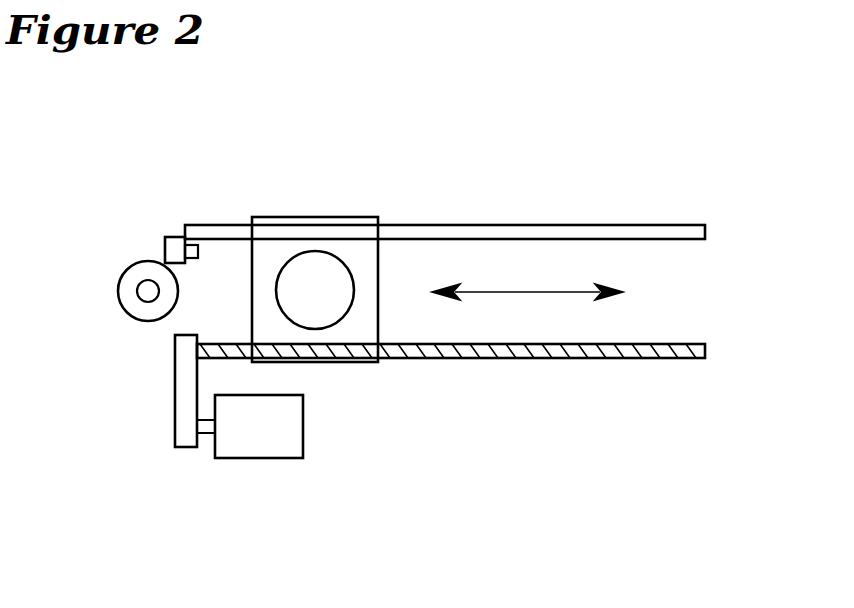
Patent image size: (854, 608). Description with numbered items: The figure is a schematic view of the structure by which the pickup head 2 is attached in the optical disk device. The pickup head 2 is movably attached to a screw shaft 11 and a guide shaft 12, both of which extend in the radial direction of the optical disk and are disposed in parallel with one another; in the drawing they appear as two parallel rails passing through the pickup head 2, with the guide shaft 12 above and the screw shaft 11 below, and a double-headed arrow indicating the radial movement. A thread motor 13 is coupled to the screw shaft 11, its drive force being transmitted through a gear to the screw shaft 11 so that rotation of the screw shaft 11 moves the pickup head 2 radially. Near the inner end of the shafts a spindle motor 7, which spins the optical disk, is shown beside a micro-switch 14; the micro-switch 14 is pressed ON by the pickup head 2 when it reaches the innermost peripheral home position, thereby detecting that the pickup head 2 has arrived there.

The pickup head 2 is at (380, 303).
The spindle motor 7 is at (122, 288).
The screw shaft 11 is at (697, 345).
The guide shaft 12 is at (647, 233).
The thread motor 13 is at (293, 447).
The micro-switch 14 is at (168, 238).